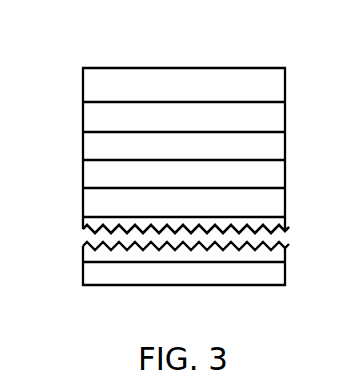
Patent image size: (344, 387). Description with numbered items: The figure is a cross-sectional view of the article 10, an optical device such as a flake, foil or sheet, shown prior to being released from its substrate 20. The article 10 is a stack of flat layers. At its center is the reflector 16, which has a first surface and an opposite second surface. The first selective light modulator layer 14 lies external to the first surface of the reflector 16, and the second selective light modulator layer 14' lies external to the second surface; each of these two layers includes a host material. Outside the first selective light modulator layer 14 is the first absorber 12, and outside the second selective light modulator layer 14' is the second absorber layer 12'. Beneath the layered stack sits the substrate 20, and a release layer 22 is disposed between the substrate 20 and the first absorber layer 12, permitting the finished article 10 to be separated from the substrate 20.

The article 10 is at (143, 63).
The second absorber layer 12' is at (161, 87).
The second selective light modulator layer 14' is at (161, 117).
The reflector 16 is at (83, 147).
The first selective light modulator layer 14 is at (161, 176).
The first absorber 12 is at (161, 205).
The release layer 22 is at (83, 229).
The substrate 20 is at (83, 275).